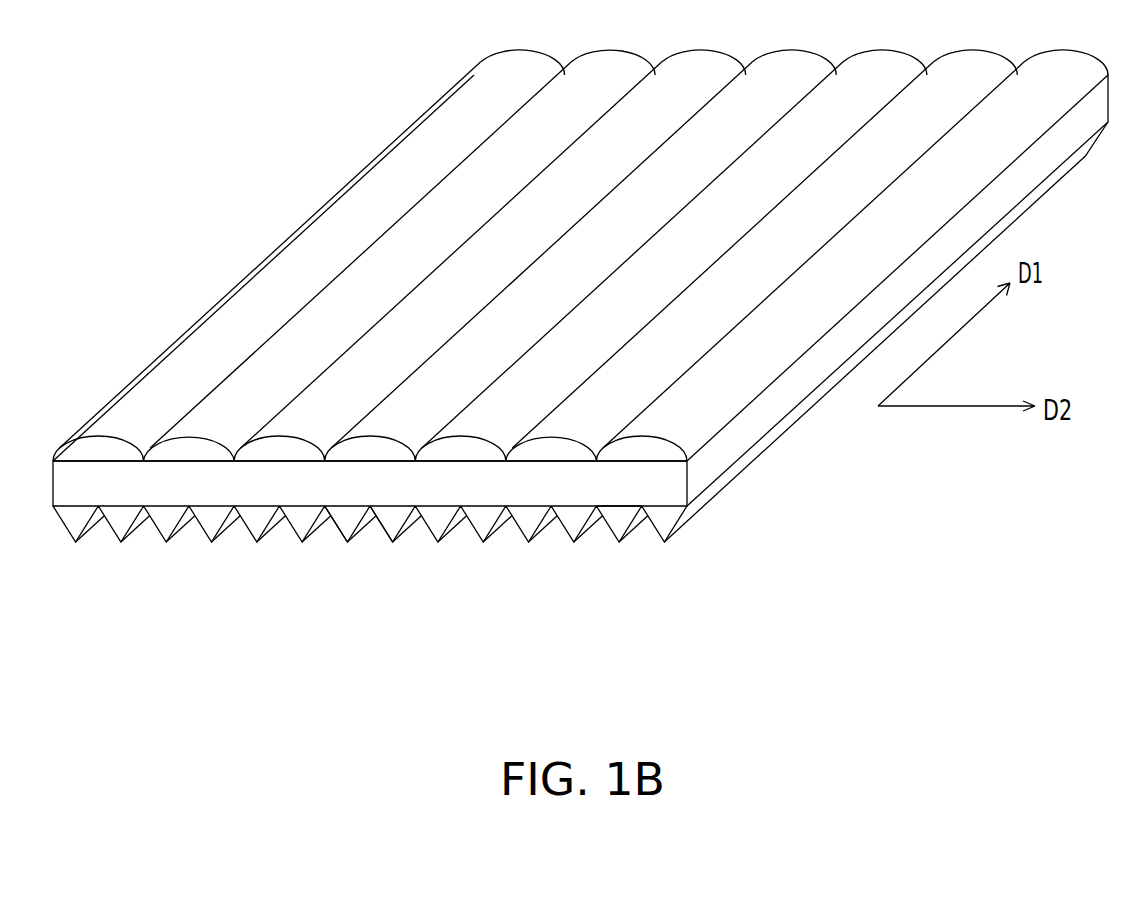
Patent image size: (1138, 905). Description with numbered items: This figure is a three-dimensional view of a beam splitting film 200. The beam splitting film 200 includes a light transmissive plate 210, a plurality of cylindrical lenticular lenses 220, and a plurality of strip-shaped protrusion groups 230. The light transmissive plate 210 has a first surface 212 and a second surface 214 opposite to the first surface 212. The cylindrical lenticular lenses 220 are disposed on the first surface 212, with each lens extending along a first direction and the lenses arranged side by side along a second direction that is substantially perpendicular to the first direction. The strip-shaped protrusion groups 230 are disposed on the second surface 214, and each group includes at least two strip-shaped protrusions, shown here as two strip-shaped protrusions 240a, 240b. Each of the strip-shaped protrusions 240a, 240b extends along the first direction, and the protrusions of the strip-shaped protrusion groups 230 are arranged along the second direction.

The beam splitting film 200 is at (968, 557).
The light transmissive plate 210 is at (668, 488).
The first surface 212 is at (622, 460).
The second surface 214 is at (612, 507).
The cylindrical lenticular lenses 220 is at (663, 450).
The strip-shaped protrusion groups 230 is at (450, 640).
The strip-shaped protrusion 240a is at (345, 520).
The strip-shaped protrusion 240b is at (390, 517).